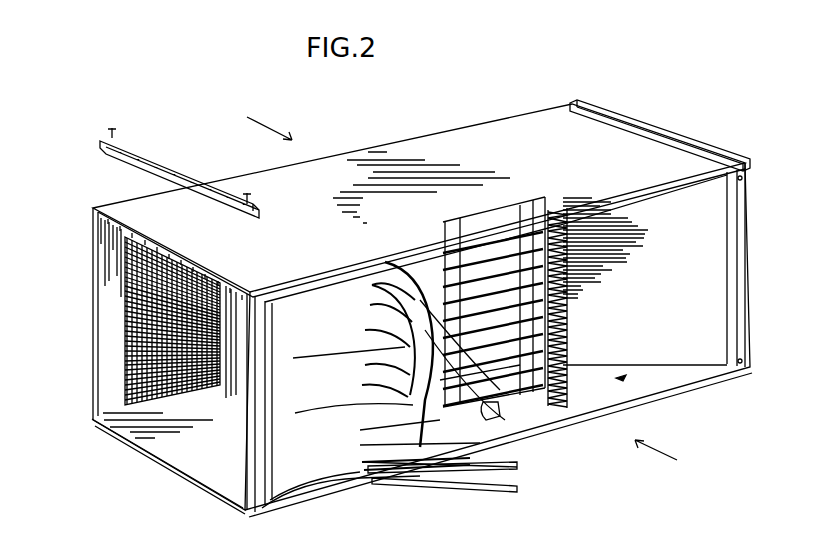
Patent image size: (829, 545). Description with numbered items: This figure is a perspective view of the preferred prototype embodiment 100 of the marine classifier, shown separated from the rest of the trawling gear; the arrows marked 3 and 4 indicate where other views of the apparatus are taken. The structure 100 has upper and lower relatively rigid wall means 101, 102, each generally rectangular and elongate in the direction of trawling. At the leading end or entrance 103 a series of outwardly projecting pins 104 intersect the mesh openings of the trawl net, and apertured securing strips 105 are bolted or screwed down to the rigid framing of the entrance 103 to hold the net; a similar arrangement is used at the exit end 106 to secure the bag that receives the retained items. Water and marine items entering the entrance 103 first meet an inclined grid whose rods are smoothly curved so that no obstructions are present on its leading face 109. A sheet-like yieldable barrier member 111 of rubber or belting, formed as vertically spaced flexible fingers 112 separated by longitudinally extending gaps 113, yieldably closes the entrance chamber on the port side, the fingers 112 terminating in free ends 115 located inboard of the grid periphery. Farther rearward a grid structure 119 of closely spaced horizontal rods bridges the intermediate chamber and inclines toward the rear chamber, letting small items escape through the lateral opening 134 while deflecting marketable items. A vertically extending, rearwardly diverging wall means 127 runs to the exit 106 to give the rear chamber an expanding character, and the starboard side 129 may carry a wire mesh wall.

The marine classifier embodiment 100 is at (394, 146).
The upper rigid wall means 101 is at (465, 143).
The lower rigid wall means 102 is at (175, 467).
The entrance 103 is at (103, 428).
The pins 104 is at (131, 221).
The apertured securing strips 105 is at (135, 145).
The exit end 106 is at (656, 130).
The leading face of grid 109 is at (508, 405).
The yieldable barrier member 111 is at (312, 470).
The flexible fingers 112 is at (415, 470).
The longitudinally extending gaps 113 is at (375, 468).
The free ends of fingers 115 is at (520, 489).
The grid structure 119 is at (562, 378).
The diverging wall means 127 is at (692, 264).
The starboard side 129 is at (142, 308).
The lateral opening 134 is at (616, 378).
The section line 3 is at (267, 119).
The section line 4 is at (667, 453).